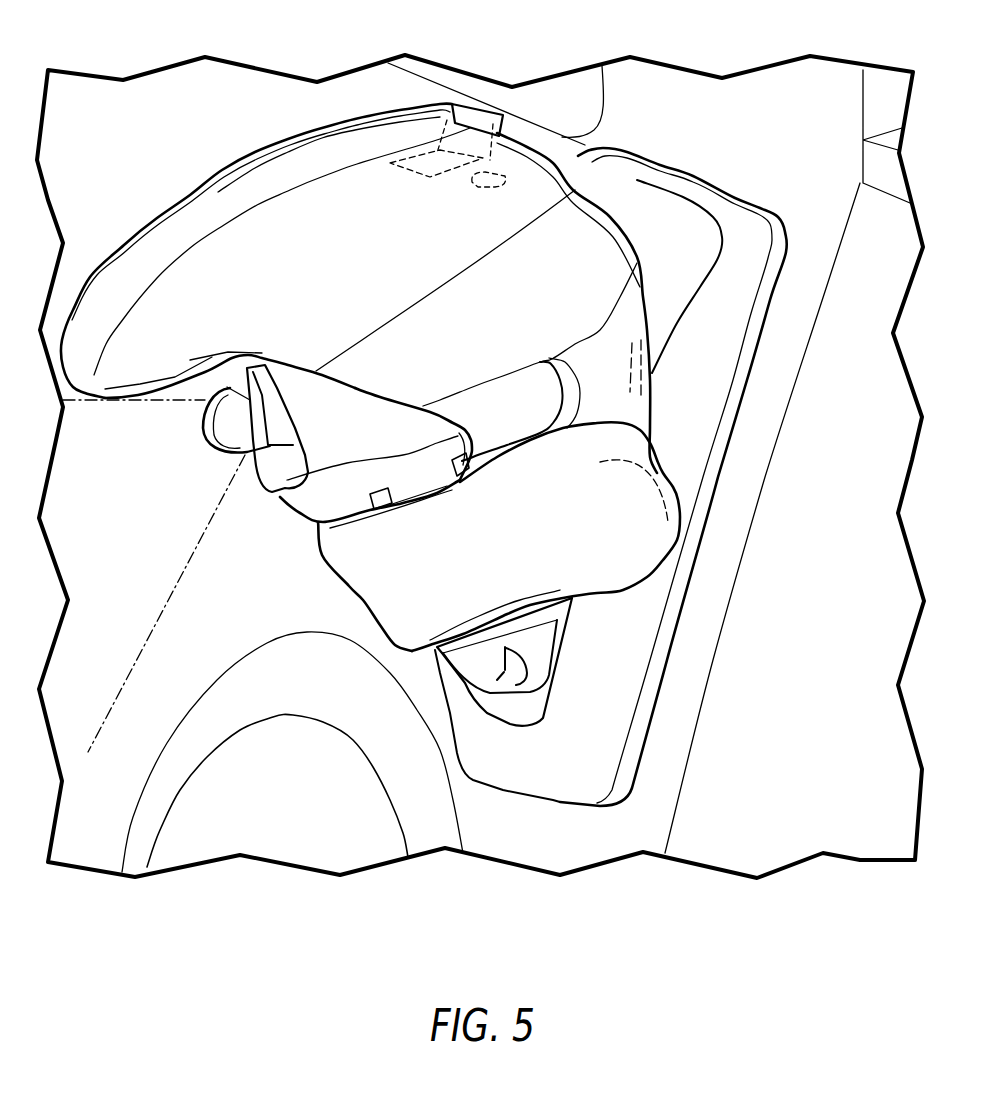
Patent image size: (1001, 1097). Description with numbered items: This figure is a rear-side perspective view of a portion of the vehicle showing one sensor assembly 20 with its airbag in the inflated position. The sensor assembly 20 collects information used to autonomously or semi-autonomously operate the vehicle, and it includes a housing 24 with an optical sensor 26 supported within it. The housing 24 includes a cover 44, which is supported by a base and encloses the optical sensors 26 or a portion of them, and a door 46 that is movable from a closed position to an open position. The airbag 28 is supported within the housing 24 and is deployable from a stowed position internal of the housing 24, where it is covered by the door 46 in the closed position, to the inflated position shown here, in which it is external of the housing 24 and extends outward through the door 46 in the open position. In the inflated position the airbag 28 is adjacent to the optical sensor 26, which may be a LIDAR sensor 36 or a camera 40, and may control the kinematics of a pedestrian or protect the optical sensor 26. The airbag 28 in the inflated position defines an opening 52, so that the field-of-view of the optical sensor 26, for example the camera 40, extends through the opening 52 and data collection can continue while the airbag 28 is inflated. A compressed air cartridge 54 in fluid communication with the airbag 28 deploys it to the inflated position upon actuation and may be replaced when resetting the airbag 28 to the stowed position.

The sensor assembly 20 is at (719, 139).
The housing 24 is at (227, 151).
The optical sensor 26 is at (371, 558).
The airbag 28 is at (212, 215).
The LIDAR sensor 36 is at (382, 580).
The camera 40 is at (242, 458).
The cover 44 is at (587, 232).
The door 46 is at (479, 118).
The opening 52 is at (354, 386).
The compressed air cartridge 54 is at (480, 187).